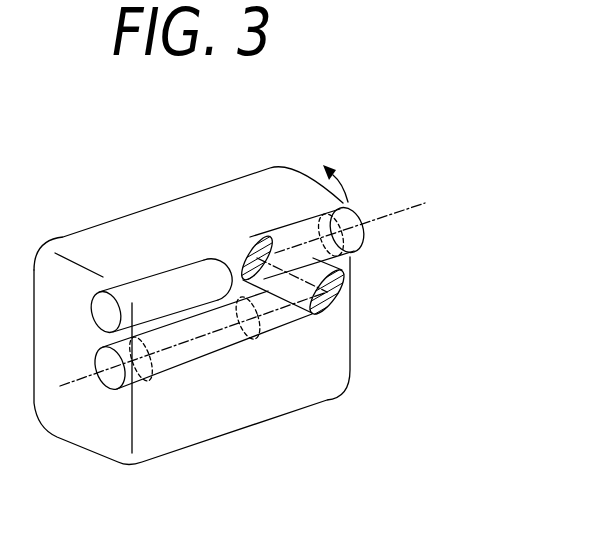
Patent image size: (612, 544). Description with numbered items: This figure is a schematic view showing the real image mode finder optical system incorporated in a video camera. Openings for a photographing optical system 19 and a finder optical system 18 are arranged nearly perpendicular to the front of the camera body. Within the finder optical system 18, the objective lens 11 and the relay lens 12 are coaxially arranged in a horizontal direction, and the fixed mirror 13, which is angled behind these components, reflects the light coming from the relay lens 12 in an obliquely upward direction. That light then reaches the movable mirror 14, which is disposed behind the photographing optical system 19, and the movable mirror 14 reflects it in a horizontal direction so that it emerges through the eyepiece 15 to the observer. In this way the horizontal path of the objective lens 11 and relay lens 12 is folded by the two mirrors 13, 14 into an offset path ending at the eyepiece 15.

The objective lens 11 is at (140, 380).
The relay lens 12 is at (250, 341).
The fixed mirror 13 is at (343, 281).
The movable mirror 14 is at (262, 238).
The eyepiece 15 is at (354, 209).
The finder optical system 18 is at (296, 332).
The photographing optical system 19 is at (157, 272).